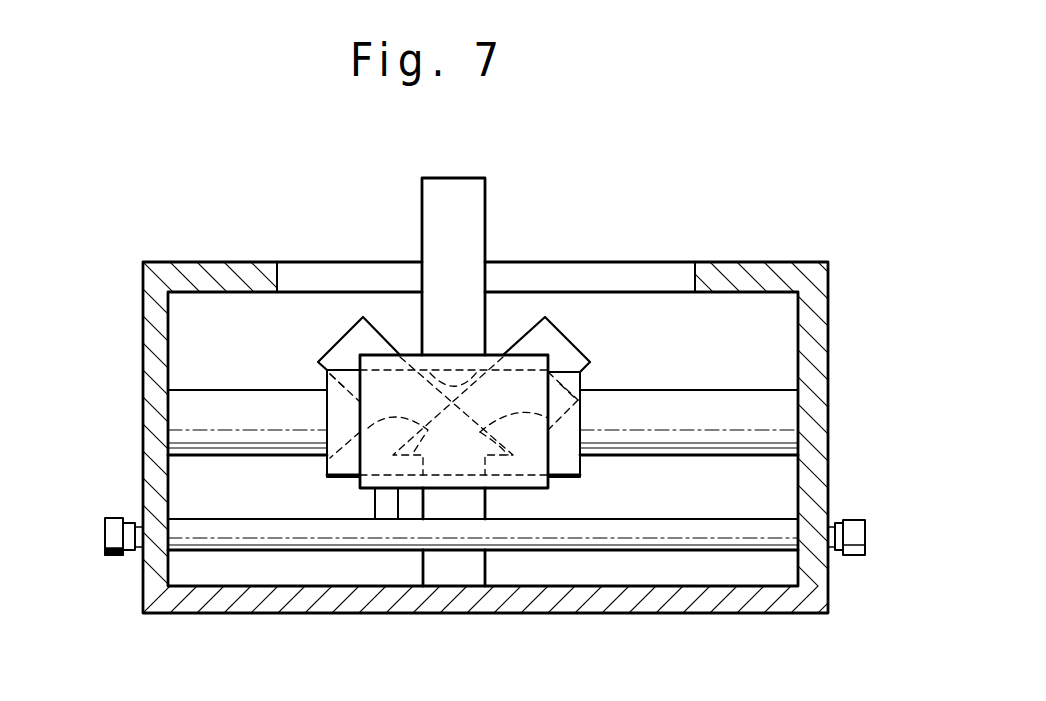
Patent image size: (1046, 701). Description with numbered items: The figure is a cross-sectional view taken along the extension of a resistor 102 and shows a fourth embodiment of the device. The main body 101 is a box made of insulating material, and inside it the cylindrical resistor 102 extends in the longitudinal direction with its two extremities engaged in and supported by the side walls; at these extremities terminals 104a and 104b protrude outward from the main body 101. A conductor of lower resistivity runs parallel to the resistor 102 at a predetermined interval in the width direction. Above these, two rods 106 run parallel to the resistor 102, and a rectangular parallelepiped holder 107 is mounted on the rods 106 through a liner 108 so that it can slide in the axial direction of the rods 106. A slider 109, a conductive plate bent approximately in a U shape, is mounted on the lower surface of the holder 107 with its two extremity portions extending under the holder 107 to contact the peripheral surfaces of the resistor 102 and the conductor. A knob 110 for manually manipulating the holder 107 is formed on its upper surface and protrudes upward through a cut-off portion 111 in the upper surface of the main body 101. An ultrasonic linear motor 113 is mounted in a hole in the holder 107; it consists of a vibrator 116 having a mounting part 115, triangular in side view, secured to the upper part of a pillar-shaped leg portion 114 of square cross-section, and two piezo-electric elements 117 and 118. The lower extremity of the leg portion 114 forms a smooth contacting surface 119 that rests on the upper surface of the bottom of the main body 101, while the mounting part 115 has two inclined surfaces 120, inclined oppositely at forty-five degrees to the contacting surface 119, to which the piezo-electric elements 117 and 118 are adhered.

The main body of the device 101 is at (748, 277).
The resistor 102 is at (625, 537).
The terminal 104a is at (853, 557).
The terminal 104b is at (117, 557).
The rods 106 is at (687, 408).
The holder 107 is at (372, 462).
The liner 108 is at (327, 405).
The slider 109 is at (388, 513).
The knob 110 is at (465, 203).
The cut-off portion 111 is at (693, 279).
The ultrasonic linear motor 113 is at (510, 320).
The leg portion 114 is at (473, 568).
The mounting part 115 is at (565, 477).
The vibrator 116 is at (497, 511).
The piezo-electric element 117 is at (552, 348).
The piezo-electric element 118 is at (340, 346).
The contacting surface 119 is at (453, 587).
The inclined surfaces 120 is at (578, 400).